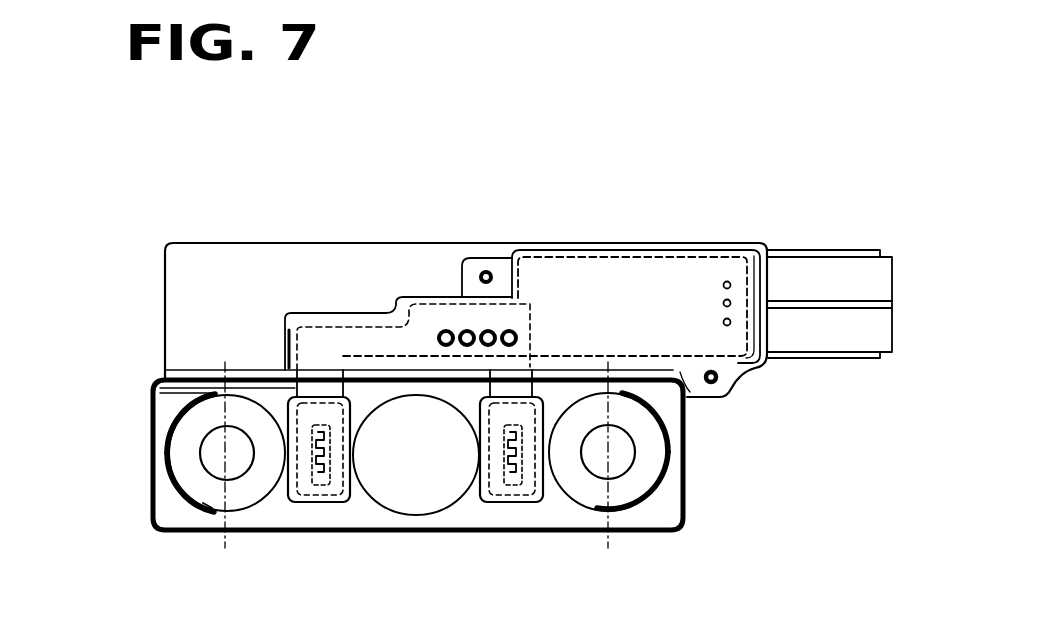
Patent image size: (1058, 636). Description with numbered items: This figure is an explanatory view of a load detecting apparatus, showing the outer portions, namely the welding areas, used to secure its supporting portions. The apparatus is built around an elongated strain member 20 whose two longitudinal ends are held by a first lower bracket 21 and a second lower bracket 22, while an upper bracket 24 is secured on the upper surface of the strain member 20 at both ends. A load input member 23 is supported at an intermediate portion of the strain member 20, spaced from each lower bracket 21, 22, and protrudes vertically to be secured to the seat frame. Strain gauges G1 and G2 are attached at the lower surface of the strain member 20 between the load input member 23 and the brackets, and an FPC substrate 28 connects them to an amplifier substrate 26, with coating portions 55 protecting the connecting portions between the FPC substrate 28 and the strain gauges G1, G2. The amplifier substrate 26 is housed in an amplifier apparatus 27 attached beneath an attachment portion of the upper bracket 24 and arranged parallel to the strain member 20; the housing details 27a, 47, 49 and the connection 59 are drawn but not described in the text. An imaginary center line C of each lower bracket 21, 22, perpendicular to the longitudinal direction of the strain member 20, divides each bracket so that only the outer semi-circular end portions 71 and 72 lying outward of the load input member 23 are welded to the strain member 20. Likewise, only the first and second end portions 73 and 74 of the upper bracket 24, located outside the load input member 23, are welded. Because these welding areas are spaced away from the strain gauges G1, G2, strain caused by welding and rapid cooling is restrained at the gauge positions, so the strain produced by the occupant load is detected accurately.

The upper bracket 24 is at (238, 240).
The case body 47 is at (367, 252).
The amplifier apparatus 27 is at (692, 238).
The mounting lug 27a is at (499, 266).
The amplifier substrate 26 is at (614, 272).
The cable 59 is at (853, 270).
The strain member 20 is at (462, 515).
The FPC substrate 28 is at (158, 393).
The center line C is at (415, 473).
The first lower bracket 21 is at (207, 503).
The second lower bracket 22 is at (628, 505).
The load input member 23 is at (410, 505).
The first end portion of the upper bracket 73 is at (170, 450).
The outer end portion of the first lower bracket 71 is at (178, 497).
The outer end portion of the second lower bracket 72 is at (682, 448).
The second end portion of the upper bracket 74 is at (682, 503).
The strain gauge G1 is at (313, 493).
The strain gauge G2 is at (513, 478).
The coating portion 55 is at (340, 505).
The mounting hole 49 is at (712, 387).